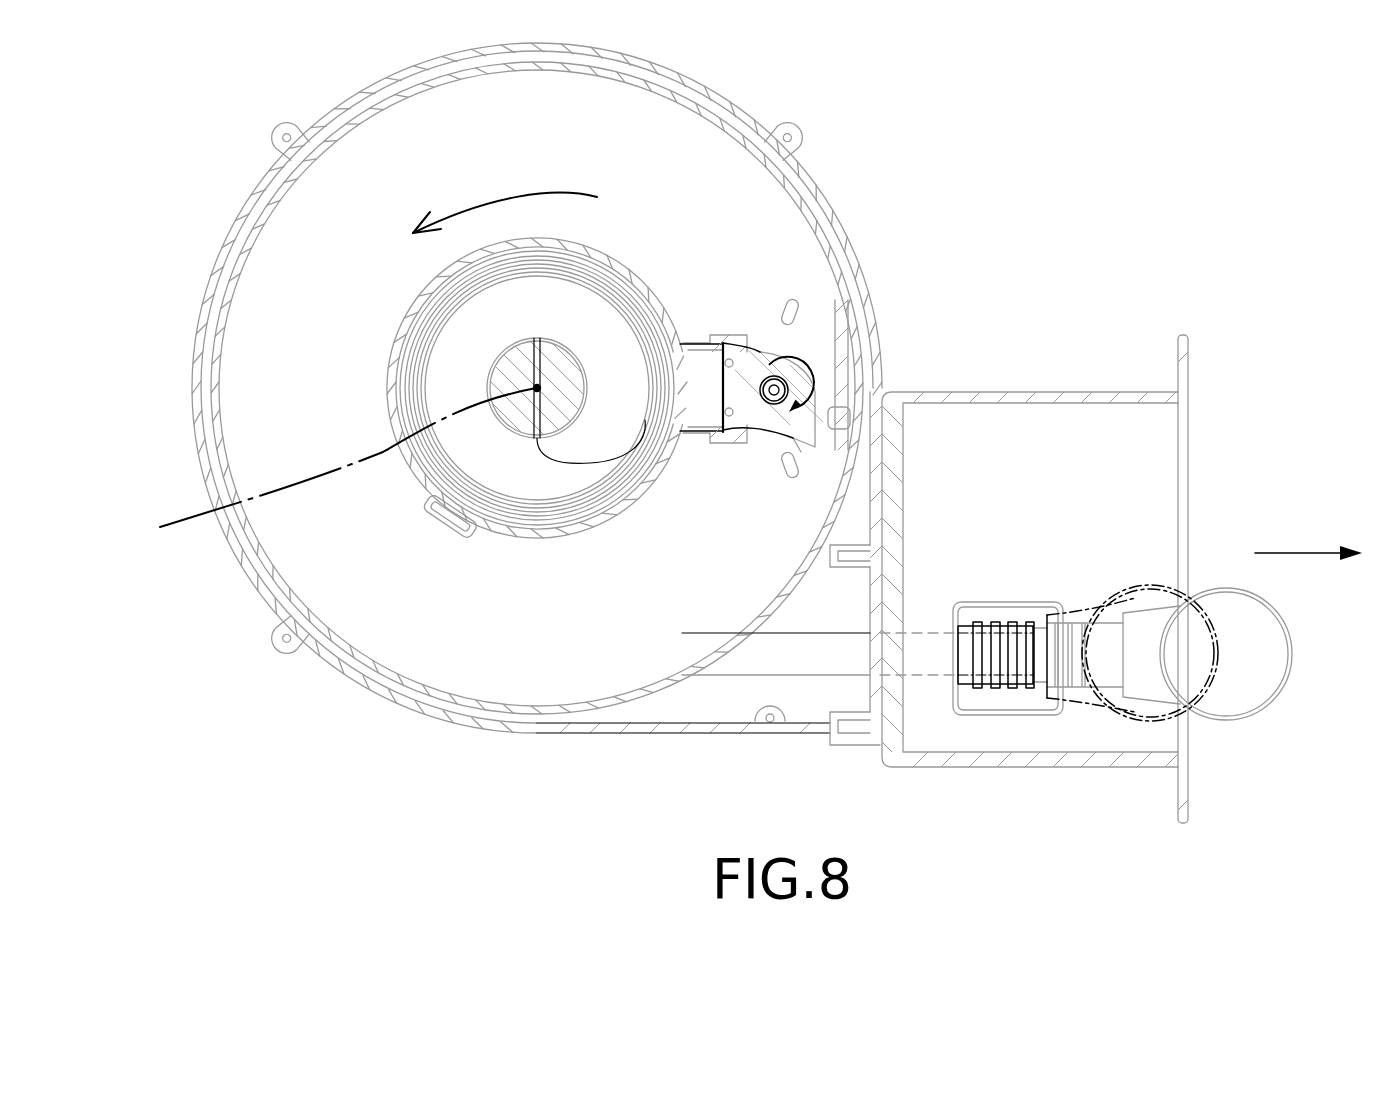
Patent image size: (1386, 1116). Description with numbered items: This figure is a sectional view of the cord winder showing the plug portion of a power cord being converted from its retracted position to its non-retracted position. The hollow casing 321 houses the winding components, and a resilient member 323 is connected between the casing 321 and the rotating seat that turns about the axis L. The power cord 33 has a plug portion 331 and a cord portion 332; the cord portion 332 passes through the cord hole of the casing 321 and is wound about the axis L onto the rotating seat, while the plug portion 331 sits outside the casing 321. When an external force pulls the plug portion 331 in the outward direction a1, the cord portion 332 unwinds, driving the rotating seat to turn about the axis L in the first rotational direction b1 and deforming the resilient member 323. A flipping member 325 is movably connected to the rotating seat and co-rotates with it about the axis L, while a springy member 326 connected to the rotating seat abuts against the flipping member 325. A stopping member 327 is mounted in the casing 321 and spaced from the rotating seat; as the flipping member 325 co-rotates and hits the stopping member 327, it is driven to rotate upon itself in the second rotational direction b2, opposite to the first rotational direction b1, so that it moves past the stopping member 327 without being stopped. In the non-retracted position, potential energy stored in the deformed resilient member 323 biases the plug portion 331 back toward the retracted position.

The casing 321 is at (737, 107).
The resilient member 323 is at (413, 373).
The flipping member 325 is at (798, 358).
The springy member 326 is at (752, 348).
The stopping member 327 is at (850, 375).
The cord portion 332 is at (718, 675).
The power cord 33 is at (1133, 696).
The plug portion 331 is at (1272, 702).
The first rotational direction b1 is at (505, 192).
The second rotational direction b2 is at (800, 378).
The outward direction a1 is at (1308, 537).
The axis L is at (336, 465).